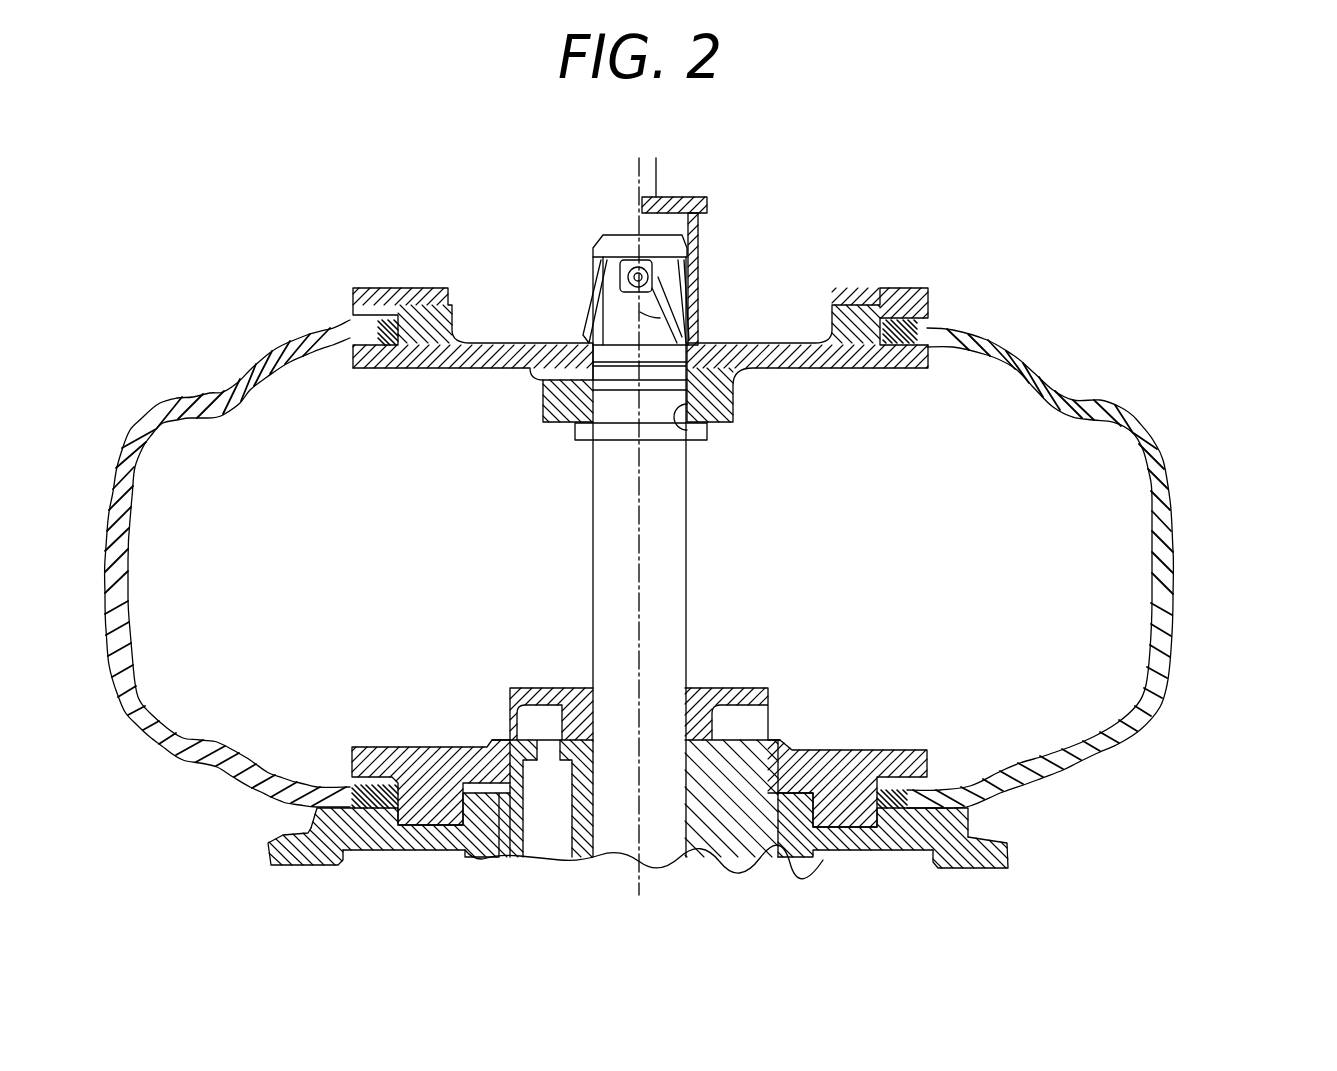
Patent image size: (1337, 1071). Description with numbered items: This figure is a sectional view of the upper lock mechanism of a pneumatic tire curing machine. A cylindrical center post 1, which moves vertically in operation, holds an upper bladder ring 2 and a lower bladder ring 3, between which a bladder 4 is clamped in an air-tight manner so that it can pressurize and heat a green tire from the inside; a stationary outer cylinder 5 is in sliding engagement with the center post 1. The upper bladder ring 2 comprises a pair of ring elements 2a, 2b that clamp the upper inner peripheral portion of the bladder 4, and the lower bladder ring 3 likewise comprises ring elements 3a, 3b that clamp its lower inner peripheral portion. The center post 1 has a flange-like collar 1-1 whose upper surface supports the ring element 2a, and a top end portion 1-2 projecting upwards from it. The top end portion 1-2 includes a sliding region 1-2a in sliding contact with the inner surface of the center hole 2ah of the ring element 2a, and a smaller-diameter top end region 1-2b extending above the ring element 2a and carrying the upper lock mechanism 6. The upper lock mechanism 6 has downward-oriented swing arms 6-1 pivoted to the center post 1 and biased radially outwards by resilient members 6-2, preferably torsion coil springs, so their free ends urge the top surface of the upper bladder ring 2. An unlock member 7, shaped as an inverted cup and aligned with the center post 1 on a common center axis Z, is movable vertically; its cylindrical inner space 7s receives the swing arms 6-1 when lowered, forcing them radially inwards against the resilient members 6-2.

The center axis Z is at (638, 172).
The center post 1 is at (687, 593).
The flange-like collar 1-1 is at (585, 436).
The top end portion 1-2 is at (599, 323).
The sliding region 1-2a is at (540, 378).
The top end region 1-2b is at (588, 307).
The upper bladder ring 2 is at (878, 288).
The ring element 2a is at (794, 365).
The center hole 2ah is at (686, 428).
The ring element 2b is at (928, 303).
The lower bladder ring 3 is at (843, 750).
The ring element 3a is at (887, 752).
The ring element 3b is at (1010, 845).
The bladder 4 is at (1175, 535).
The stationary outer cylinder 5 is at (745, 747).
The upper lock mechanism 6 is at (597, 272).
The swing arm 6-1 is at (588, 293).
The resilient member 6-2 is at (664, 317).
The unlock member 7 is at (697, 230).
The inner space 7s is at (665, 220).